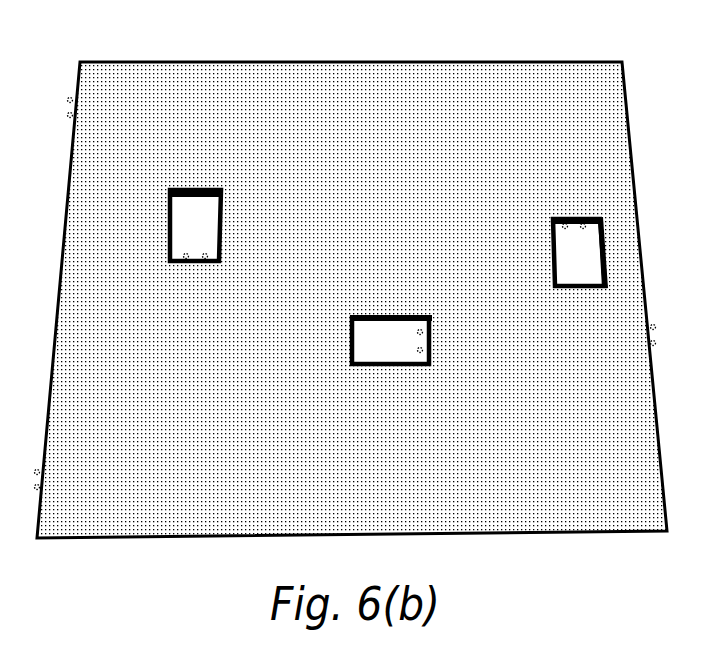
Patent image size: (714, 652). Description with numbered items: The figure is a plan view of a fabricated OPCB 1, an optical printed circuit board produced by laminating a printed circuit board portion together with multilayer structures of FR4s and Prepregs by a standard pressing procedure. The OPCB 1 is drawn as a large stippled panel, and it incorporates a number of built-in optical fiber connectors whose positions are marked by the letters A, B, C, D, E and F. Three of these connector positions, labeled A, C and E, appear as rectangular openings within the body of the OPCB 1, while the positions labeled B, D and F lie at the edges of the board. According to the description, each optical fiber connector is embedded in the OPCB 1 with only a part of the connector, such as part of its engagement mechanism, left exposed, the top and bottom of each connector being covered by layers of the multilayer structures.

The OPCB 1 is at (48, 31).
The position A is at (415, 341).
The position B is at (60, 477).
The position C is at (195, 255).
The position D is at (95, 106).
The position E is at (579, 215).
The position F is at (631, 339).